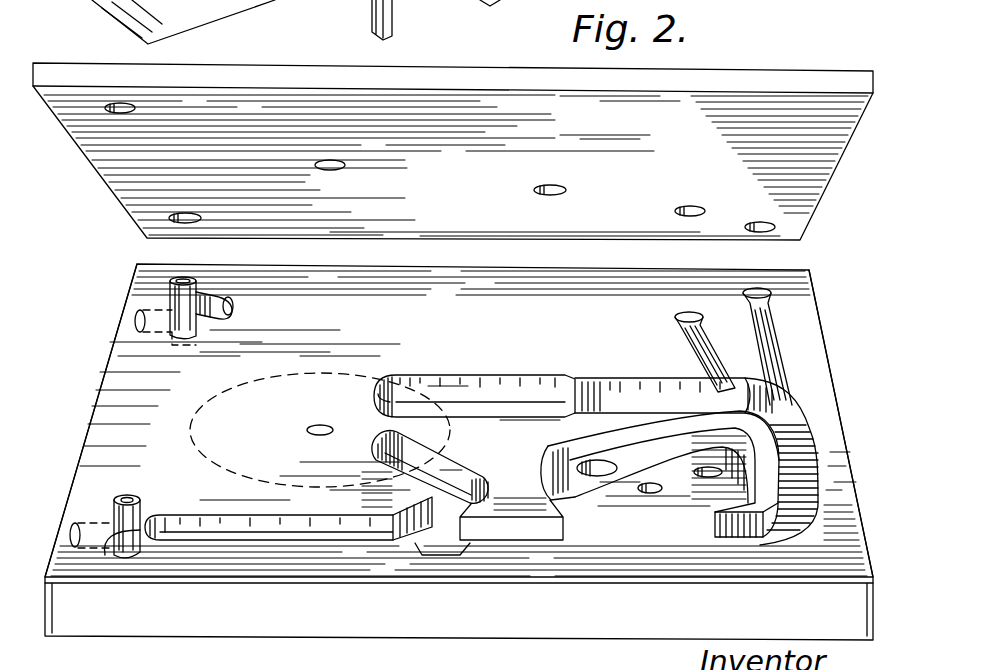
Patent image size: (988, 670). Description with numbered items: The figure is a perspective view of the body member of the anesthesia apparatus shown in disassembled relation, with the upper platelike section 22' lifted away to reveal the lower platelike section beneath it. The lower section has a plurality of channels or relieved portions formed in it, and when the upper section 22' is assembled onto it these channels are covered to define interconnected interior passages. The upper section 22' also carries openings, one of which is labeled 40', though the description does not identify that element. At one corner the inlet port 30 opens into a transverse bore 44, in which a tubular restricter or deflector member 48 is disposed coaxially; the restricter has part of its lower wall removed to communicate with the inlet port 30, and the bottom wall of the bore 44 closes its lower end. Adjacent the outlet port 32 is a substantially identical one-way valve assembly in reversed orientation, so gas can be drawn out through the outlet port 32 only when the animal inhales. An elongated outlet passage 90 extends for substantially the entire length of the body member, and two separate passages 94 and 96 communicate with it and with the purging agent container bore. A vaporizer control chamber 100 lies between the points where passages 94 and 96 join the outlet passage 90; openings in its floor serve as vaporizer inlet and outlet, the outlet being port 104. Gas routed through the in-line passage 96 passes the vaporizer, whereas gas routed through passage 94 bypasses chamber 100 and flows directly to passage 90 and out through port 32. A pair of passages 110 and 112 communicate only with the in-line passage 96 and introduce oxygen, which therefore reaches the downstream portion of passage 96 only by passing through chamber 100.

The upper platelike section 22' is at (453, 130).
The hole 40' is at (153, 123).
The transverse passage or bore 44 is at (196, 218).
The tubular restricter or deflector member 48 is at (180, 292).
The inlet port 30 is at (135, 318).
The outlet port 32 is at (66, 515).
The elongated outlet passage 90 is at (178, 520).
The passage 94 is at (473, 472).
The passage 96 is at (596, 385).
The vaporizer control chamber 100 is at (547, 460).
The port or opening 104 is at (553, 497).
The passage 110 is at (690, 336).
The passage 112 is at (772, 330).